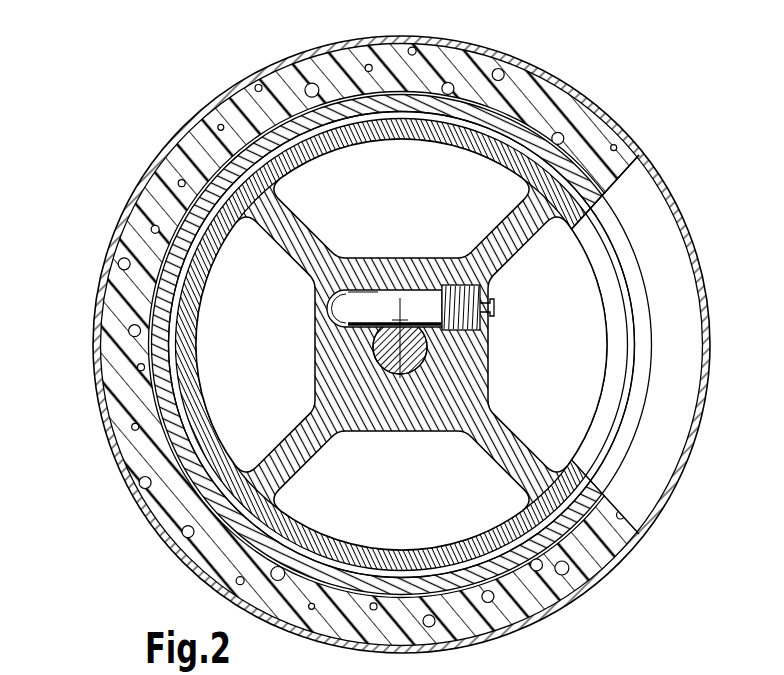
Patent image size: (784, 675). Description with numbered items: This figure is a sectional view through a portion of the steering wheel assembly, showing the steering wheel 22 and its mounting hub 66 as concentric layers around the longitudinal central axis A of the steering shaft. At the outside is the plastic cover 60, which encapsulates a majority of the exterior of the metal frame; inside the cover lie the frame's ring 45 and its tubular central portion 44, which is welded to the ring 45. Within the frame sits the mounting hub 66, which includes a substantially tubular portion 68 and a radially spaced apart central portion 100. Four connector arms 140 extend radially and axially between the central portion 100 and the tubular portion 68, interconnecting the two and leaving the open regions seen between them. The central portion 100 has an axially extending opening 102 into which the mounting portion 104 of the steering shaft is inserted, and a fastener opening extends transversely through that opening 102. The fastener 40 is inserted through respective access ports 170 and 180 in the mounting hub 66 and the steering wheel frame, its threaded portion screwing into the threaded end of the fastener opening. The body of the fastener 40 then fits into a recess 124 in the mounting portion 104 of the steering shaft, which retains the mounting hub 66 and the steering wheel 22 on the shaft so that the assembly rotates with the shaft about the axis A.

The steering wheel 22 is at (574, 70).
The plastic cover 60 is at (460, 67).
The mounting hub 66 is at (505, 130).
The tubular central portion 44 is at (545, 160).
The tubular portion 68 is at (300, 136).
The ring 45 is at (165, 396).
The fastener 40 is at (503, 299).
The central portion 100 is at (318, 302).
The axially extending opening 102 is at (428, 338).
The mounting portion 104 is at (430, 333).
The recess 124 is at (380, 320).
The connector arms 140 is at (290, 222).
The access port 170 is at (578, 470).
The access port 180 is at (603, 488).
The longitudinal central axis A is at (430, 368).